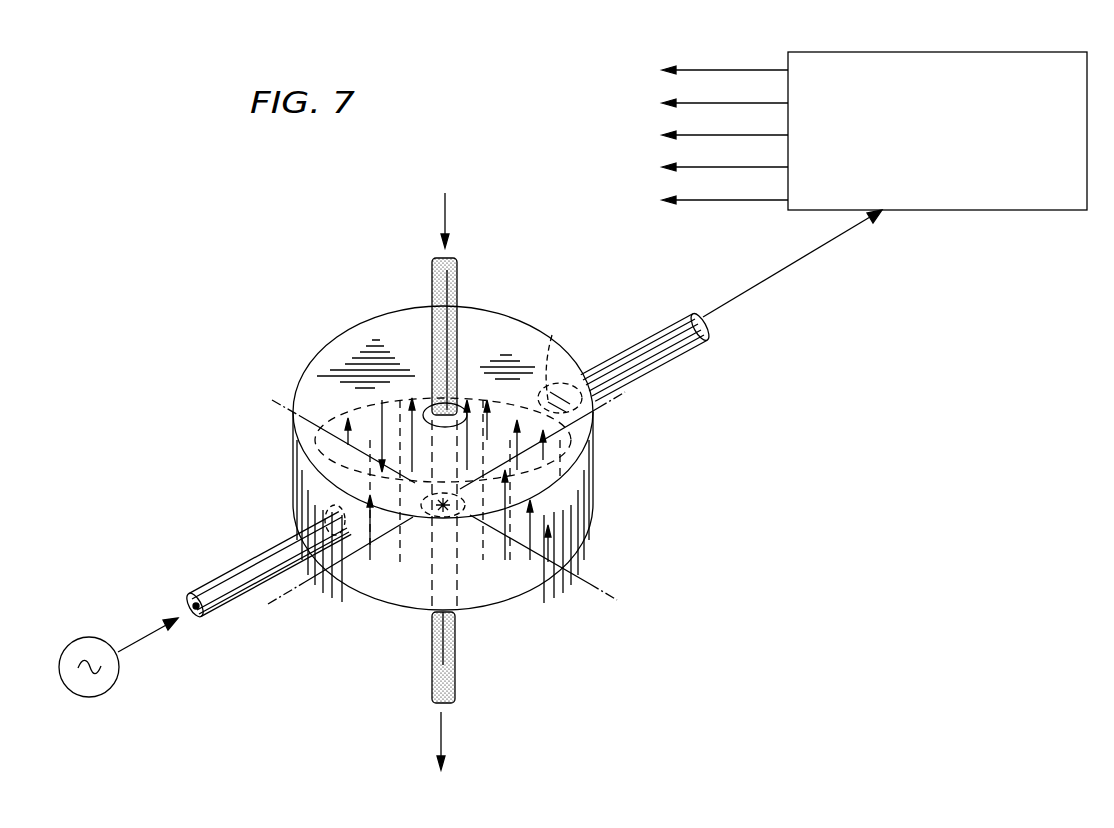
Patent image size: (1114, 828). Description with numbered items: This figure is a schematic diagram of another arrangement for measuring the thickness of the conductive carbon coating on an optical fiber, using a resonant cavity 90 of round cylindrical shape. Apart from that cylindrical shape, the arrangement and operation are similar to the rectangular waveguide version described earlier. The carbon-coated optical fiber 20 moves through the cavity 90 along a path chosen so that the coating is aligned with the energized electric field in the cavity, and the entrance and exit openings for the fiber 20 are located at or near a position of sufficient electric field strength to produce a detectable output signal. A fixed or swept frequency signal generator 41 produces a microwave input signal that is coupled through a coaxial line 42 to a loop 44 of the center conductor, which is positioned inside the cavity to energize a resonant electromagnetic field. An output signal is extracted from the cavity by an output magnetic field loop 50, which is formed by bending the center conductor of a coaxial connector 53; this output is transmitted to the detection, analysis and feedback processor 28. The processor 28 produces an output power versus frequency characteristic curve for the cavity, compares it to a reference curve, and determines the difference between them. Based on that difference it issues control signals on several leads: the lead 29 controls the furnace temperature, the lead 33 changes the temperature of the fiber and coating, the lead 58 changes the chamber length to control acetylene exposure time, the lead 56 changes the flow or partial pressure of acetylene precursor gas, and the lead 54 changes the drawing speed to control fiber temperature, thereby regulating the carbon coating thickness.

The optical fiber 20 is at (457, 290).
The detection, analysis and feedback processor 28 is at (1022, 52).
The lead 29 is at (703, 68).
The lead 33 is at (727, 101).
The lead 58 is at (735, 134).
The lead 56 is at (735, 166).
The lead 54 is at (745, 201).
The resonant cavity 90 is at (348, 344).
The output magnetic field loop 50 is at (563, 334).
The coaxial connector 53 is at (606, 350).
The loop 44 is at (290, 512).
The signal generator 41 is at (91, 637).
The coaxial line 42 is at (152, 630).